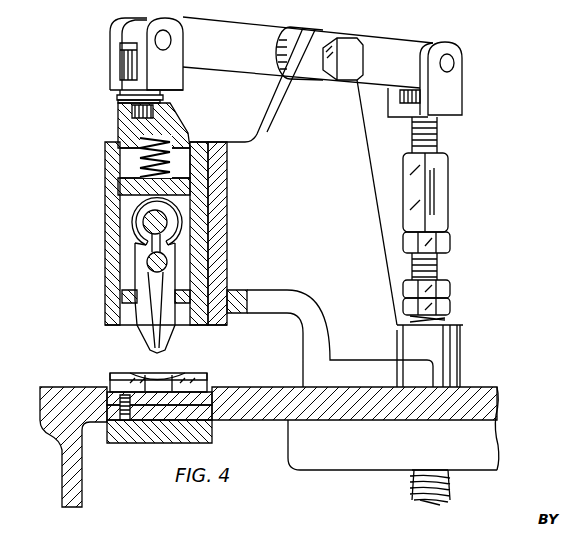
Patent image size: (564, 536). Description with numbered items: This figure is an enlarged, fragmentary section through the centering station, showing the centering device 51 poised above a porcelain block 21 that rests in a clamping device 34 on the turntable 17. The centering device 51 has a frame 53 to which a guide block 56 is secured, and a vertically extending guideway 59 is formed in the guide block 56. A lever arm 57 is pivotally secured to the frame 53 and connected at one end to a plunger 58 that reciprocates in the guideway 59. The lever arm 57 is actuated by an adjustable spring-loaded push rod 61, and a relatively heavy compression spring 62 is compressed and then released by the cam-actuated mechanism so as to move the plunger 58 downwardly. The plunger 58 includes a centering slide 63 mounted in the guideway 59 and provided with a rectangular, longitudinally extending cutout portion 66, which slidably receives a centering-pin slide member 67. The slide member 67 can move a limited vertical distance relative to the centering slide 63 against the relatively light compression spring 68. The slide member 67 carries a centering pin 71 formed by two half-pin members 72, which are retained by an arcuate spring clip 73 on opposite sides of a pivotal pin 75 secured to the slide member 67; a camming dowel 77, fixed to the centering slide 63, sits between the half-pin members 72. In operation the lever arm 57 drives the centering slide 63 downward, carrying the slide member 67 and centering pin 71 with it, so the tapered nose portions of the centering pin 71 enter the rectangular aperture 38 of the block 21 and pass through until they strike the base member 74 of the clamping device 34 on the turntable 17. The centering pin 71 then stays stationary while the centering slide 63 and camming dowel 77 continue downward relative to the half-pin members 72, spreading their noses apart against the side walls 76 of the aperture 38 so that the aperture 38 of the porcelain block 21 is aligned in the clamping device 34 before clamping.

The turntable 17 is at (57, 385).
The porcelain block 21 is at (210, 383).
The clamping device 34 is at (127, 425).
The rectangular aperture 38 is at (160, 375).
The centering device 51 is at (304, 26).
The frame 53 is at (363, 137).
The guide block 56 is at (197, 142).
The lever arm 57 is at (226, 30).
The plunger 58 is at (112, 114).
The guideway 59 is at (214, 160).
The push rod 61 is at (434, 134).
The compression spring 62 is at (452, 480).
The centering slide 63 is at (122, 128).
The cutout portion 66 is at (128, 166).
The centering-pin slide member 67 is at (116, 196).
The compression spring 68 is at (165, 143).
The centering pin 71 is at (133, 267).
The half-pin member 72 is at (148, 322).
The arcuate spring clip 73 is at (178, 206).
The base member 74 is at (210, 391).
The pivotal pin 75 is at (162, 224).
The side wall 76 is at (168, 380).
The camming dowel 77 is at (168, 262).